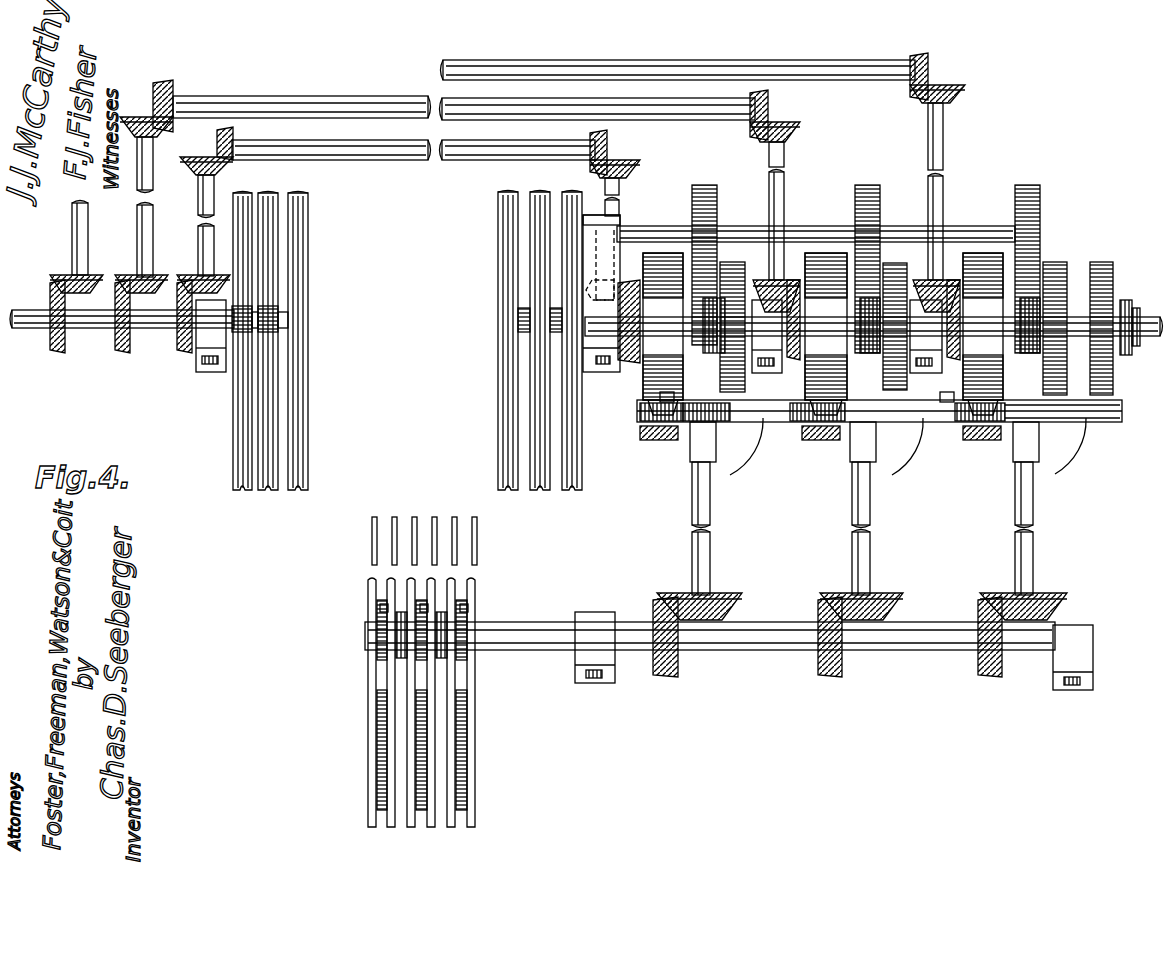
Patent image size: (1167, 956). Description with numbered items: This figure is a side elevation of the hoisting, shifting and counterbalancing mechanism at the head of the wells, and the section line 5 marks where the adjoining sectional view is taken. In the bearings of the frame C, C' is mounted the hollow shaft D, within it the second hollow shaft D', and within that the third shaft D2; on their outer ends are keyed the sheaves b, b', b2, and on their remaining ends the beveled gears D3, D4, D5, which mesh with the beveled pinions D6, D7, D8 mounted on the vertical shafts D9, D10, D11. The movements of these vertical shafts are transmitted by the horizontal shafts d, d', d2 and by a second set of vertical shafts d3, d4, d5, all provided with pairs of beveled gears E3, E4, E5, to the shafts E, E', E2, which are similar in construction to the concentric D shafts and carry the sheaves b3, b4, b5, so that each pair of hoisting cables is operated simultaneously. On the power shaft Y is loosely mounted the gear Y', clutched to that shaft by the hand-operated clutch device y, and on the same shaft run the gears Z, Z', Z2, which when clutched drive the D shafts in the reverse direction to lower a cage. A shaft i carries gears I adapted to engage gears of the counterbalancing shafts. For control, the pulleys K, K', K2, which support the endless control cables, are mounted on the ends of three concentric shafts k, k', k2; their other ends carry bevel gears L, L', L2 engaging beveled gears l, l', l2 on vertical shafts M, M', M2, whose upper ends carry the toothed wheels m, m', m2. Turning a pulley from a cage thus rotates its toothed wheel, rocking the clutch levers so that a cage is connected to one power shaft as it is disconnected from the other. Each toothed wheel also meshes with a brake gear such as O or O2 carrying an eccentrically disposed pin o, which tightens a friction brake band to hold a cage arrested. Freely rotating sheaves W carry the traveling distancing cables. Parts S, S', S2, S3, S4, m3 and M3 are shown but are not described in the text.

The section line 5- 5 is at (355, 808).
The horizontal shaft d is at (413, 139).
The horizontal shaft d' is at (464, 99).
The horizontal shaft d2 is at (443, 70).
The vertical shaft d3 is at (198, 240).
The vertical shaft d4 is at (137, 236).
The vertical shaft d5 is at (72, 233).
The sheave b is at (526, 341).
The sheave b' is at (510, 341).
The sheave b2 is at (505, 454).
The sheave b3 is at (255, 278).
The sheave b4 is at (280, 250).
The sheave b5 is at (308, 222).
The shaft E is at (149, 355).
The shaft E' is at (244, 347).
The shaft E2 is at (322, 348).
The beveled gear E3 is at (183, 352).
The beveled gear E4 is at (117, 352).
The beveled gear E5 is at (52, 342).
The hollow shaft D is at (874, 288).
The second hollow shaft D' is at (705, 326).
The third shaft D2 is at (520, 316).
The beveled gear D3 is at (637, 366).
The beveled gear D4 is at (800, 360).
The beveled gear D5 is at (968, 404).
The beveled pinion D6 is at (618, 282).
The beveled pinion D7 is at (790, 278).
The beveled pinion D8 is at (948, 280).
The vertical shaft D9 is at (605, 186).
The vertical shaft D10 is at (784, 172).
The vertical shaft D11 is at (945, 158).
The frame C is at (601, 309).
The frame C' is at (767, 351).
The gear I is at (705, 185).
The shaft i is at (738, 228).
The power shaft Y is at (991, 326).
The gear Y' is at (1102, 312).
The clutch device y is at (1132, 300).
The gear Z is at (736, 357).
The gear Z' is at (886, 318).
The gear Z2 is at (1057, 262).
The eccentrically disposed pin o is at (648, 404).
The gear O is at (642, 427).
The gear O2 is at (965, 404).
The sector S is at (1095, 446).
The bar S' is at (1074, 398).
The bar S2 is at (1100, 424).
The part S3 is at (988, 438).
The part S4 is at (942, 450).
The toothed wheel m is at (726, 473).
The toothed wheel m' is at (867, 473).
The toothed wheel m2 is at (1072, 445).
The pins m3 is at (384, 606).
The vertical shaft M is at (680, 558).
The vertical shaft M' is at (842, 558).
The vertical shaft M2 is at (1013, 536).
The hubs M3 is at (430, 760).
The beveled gear l is at (699, 590).
The beveled gear l' is at (865, 590).
The beveled gear l2 is at (1058, 594).
The bevel gear L is at (665, 648).
The bevel gear L' is at (833, 650).
The bevel gear L2 is at (992, 649).
The concentric shaft k is at (729, 641).
The concentric shaft k' is at (786, 610).
The concentric shaft k2 is at (934, 636).
The control cable sheave K is at (482, 702).
The control cable sheave K' is at (431, 720).
The control cable sheave K2 is at (388, 736).
The freely rotating sheave W is at (368, 688).